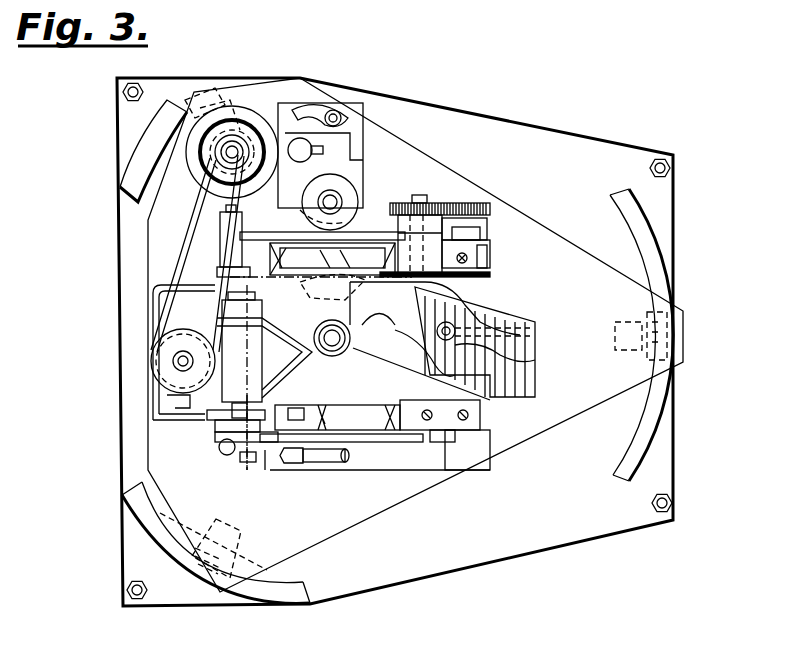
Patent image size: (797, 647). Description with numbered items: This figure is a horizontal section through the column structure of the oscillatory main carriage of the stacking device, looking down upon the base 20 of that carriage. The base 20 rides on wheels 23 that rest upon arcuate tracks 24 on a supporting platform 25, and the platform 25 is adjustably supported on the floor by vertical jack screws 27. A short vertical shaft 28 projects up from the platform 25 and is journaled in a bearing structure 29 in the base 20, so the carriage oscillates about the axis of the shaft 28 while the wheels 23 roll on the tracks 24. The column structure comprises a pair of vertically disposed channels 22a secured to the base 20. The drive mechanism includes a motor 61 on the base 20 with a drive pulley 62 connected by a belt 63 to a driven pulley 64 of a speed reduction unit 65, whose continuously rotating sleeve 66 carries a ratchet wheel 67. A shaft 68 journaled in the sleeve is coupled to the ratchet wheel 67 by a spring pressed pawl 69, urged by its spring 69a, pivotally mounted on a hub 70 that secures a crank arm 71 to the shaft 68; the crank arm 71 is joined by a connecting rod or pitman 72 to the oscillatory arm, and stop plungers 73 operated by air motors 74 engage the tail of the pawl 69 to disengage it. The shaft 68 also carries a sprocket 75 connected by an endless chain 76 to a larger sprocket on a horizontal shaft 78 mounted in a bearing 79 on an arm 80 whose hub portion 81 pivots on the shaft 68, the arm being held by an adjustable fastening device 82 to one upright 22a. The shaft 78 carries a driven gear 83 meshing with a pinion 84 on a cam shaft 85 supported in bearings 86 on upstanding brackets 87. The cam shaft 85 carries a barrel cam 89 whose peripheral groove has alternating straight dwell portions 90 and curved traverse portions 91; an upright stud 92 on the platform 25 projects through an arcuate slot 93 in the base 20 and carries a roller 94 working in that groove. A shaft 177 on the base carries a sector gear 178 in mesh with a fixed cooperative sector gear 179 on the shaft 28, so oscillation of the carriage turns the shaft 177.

The base 20 is at (412, 512).
The vertically disposed channels 22a is at (342, 430).
The wheels 23 is at (185, 138).
The arcuate tracks 24 is at (145, 175).
The supporting platform 25 is at (548, 148).
The vertical jack screws 27 is at (138, 84).
The short vertical shaft 28 is at (332, 348).
The bearing structure 29 is at (348, 352).
The motor 61 is at (200, 168).
The drive pulley 62 is at (222, 160).
The belt 63 is at (200, 216).
The driven pulley 64 is at (160, 378).
The speed reduction unit 65 is at (215, 313).
The sleeve or tubular driven shaft 66 is at (200, 410).
The ratchet wheel 67 is at (305, 414).
The shaft 68 is at (252, 462).
The spring pressed pawl 69 is at (230, 415).
The spring 69a is at (229, 456).
The hub 70 is at (240, 444).
The crank arm 71 is at (292, 441).
The connecting rod or pitman 72 is at (318, 462).
The stop plungers 73 is at (230, 434).
The air motors 74 is at (245, 356).
The sprocket 75 is at (217, 270).
The endless chain 76 is at (284, 278).
The horizontal shaft 78 is at (490, 246).
The bearing 79 is at (487, 232).
The arm 80 is at (362, 245).
The hub portion 81 is at (222, 230).
The adjustable fastening device 82 is at (300, 236).
The driven gear 83 is at (406, 215).
The gear or pinion 84 is at (472, 202).
The cam shaft 85 is at (455, 452).
The bearings 86 is at (468, 260).
The upstanding supporting brackets 87 is at (490, 262).
The barrel cam 89 is at (537, 345).
The straight dwell portions 90 is at (388, 330).
The laterally turned or curved traverse portions 91 is at (400, 355).
The upright stud 92 is at (520, 322).
The arcuate slot 93 is at (455, 328).
The roller 94 is at (468, 330).
The shaft 177 is at (332, 190).
The sector gear 178 is at (310, 205).
The fixed cooperative sector gear 179 is at (320, 296).